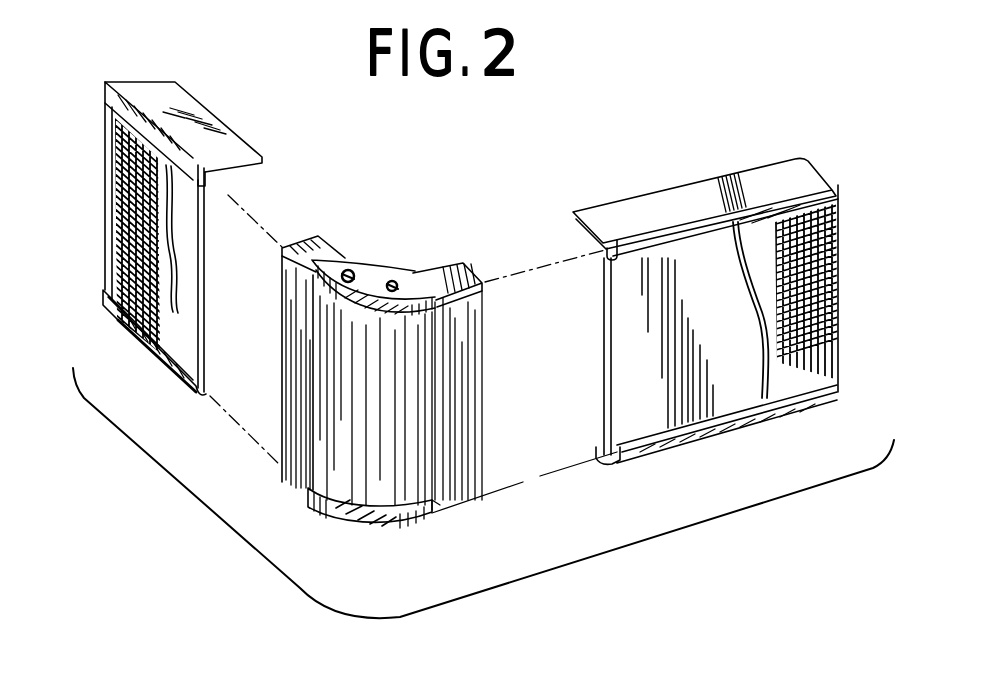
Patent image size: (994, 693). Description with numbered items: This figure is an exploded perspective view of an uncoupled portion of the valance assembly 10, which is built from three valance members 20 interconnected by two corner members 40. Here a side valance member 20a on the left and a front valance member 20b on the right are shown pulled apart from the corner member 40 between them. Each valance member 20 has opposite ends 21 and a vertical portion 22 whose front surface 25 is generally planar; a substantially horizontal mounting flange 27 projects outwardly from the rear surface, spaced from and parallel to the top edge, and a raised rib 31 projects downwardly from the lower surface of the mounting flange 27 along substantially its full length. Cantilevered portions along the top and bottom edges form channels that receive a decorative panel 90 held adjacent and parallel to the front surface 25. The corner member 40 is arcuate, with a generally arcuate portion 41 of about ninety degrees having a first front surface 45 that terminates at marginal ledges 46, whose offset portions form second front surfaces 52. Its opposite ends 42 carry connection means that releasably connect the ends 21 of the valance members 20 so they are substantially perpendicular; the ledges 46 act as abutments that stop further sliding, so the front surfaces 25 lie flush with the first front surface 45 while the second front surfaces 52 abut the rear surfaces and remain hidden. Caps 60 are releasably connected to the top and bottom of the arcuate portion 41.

The valance assembly 10 is at (448, 186).
The valance member 20 is at (462, 260).
The side valance member 20a is at (173, 100).
The front valance member 20b is at (790, 177).
The end 21 is at (110, 180).
The vertical portion 22 is at (202, 278).
The front surface 25 is at (185, 347).
The mounting flange 27 is at (242, 142).
The raised rib 31 is at (218, 176).
The corner member 40 is at (366, 438).
The arcuate portion 41 is at (345, 438).
The end 42 is at (282, 353).
The first front surface 45 is at (358, 488).
The marginal ledge 46 is at (432, 483).
The second front surface 52 is at (290, 428).
The cap 60 is at (347, 262).
The decorative panel 90 is at (122, 295).